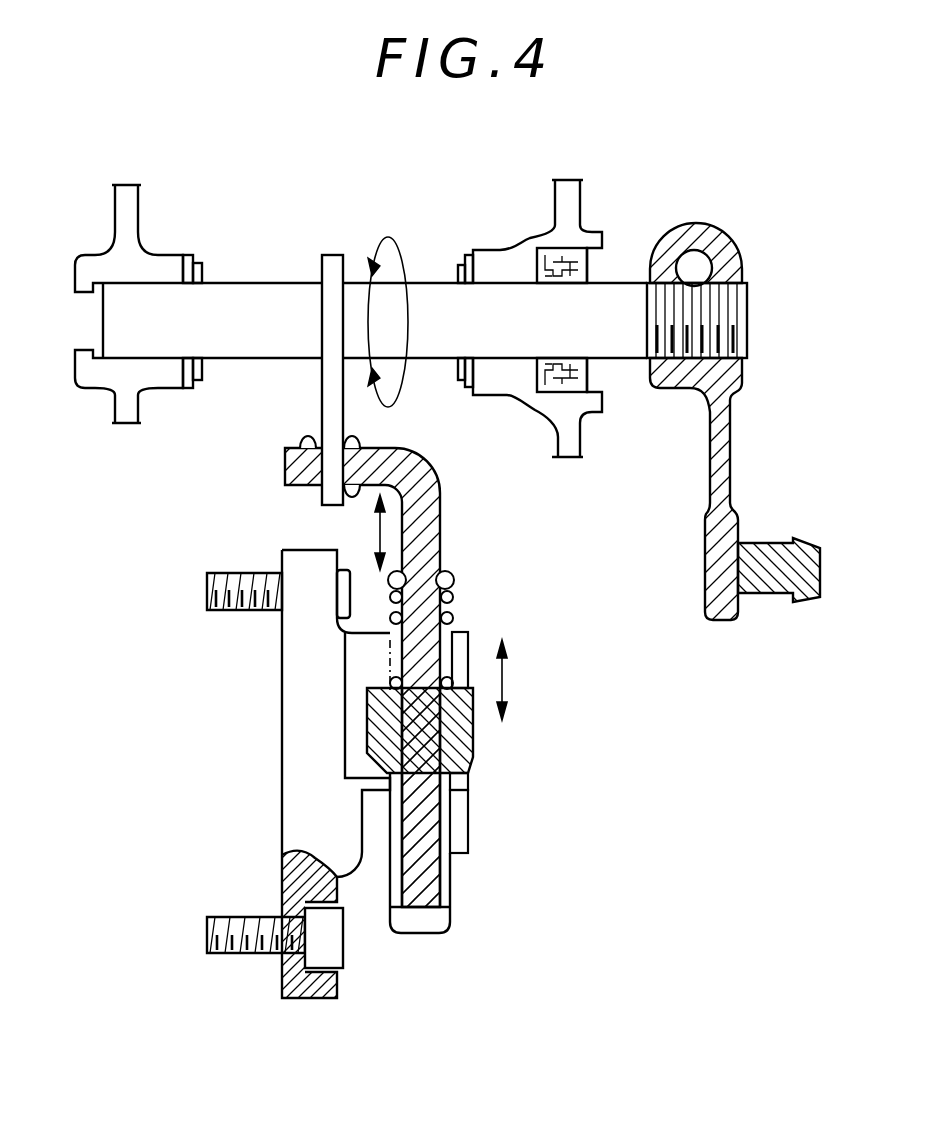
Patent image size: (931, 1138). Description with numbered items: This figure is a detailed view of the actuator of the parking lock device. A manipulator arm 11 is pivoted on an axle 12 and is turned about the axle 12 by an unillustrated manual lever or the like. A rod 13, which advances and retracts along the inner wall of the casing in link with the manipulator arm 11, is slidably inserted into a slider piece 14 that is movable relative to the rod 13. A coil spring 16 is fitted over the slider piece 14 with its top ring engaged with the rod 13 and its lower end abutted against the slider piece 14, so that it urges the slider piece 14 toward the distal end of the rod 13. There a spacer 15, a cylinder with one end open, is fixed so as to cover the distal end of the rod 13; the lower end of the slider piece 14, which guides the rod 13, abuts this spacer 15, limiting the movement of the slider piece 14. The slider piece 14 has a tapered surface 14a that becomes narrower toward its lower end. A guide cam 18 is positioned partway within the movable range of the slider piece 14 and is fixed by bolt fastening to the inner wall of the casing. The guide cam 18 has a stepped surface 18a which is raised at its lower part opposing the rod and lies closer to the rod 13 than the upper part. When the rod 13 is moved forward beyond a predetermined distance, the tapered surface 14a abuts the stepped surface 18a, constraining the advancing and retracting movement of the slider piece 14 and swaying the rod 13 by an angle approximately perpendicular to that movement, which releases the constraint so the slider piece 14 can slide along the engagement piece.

The manipulator arm 11 is at (327, 408).
The axle 12 is at (280, 298).
The rod 13 is at (443, 530).
The slider piece 14 is at (453, 735).
The tapered surface 14a is at (470, 773).
The spacer 15 is at (443, 887).
The coil spring 16 is at (450, 613).
The guide cam 18 is at (303, 770).
The stepped surface 18a is at (457, 830).